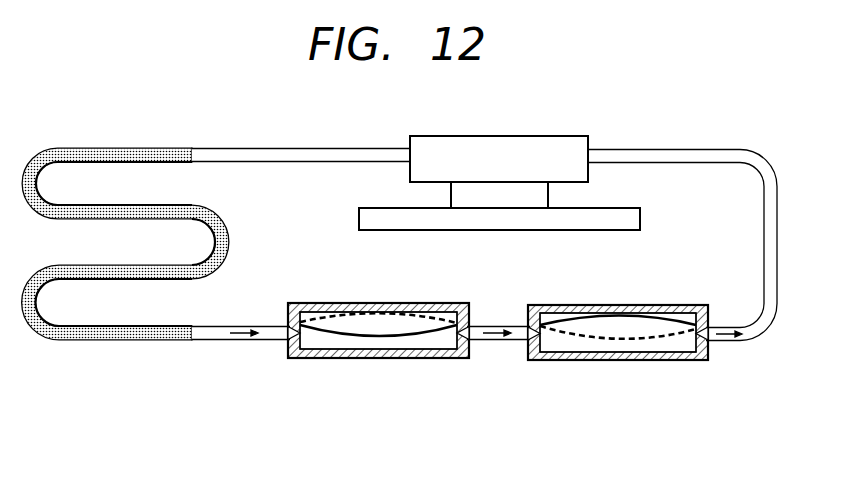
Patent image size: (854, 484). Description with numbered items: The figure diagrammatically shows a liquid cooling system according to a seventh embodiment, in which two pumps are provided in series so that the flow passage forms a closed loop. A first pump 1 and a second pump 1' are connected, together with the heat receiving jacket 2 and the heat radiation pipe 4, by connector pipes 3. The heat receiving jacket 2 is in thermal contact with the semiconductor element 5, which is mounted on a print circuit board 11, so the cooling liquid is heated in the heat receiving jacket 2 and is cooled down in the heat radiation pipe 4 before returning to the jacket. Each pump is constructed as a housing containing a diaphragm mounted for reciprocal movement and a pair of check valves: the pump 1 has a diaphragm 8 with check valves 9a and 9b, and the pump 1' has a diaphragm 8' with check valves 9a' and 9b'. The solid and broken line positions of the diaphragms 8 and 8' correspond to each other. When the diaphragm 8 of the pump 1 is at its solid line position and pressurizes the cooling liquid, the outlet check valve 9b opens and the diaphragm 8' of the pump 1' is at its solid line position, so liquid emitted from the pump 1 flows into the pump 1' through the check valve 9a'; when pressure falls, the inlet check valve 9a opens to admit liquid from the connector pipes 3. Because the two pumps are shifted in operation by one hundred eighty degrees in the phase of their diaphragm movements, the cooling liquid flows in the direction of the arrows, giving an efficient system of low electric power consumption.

The pump 1 is at (346, 372).
The pump 1' is at (593, 376).
The heat receiving jacket 2 is at (527, 147).
The connector pipes 3 is at (772, 334).
The heat radiation pipe 4 is at (143, 341).
The semiconductor element 5 is at (481, 196).
The diaphragm 8 is at (378, 373).
The diaphragm 8' is at (618, 369).
The check valve 9a is at (262, 371).
The check valve 9a' is at (509, 381).
The check valve 9b is at (435, 385).
The check valve 9b' is at (676, 387).
The print circuit board 11 is at (608, 215).